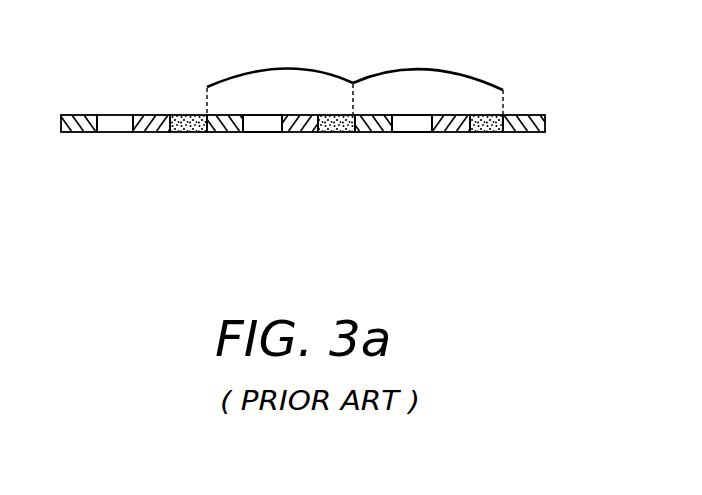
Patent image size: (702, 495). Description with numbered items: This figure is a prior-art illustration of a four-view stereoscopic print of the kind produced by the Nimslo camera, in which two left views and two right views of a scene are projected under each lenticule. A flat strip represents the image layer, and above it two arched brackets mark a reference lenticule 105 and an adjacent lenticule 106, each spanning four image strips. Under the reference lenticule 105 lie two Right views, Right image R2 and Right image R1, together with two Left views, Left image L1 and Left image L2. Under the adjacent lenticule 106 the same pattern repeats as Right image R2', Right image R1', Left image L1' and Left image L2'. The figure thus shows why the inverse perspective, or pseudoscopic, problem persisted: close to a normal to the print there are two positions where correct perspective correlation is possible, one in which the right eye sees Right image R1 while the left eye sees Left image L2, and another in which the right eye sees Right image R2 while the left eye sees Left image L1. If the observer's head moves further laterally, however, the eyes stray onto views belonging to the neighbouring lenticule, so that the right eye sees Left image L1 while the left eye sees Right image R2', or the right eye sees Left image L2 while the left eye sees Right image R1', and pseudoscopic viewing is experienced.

The reference lenticule 105 is at (281, 70).
The adjacent lenticule 106 is at (489, 73).
The Right image R2 is at (225, 164).
The Right image R1 is at (262, 164).
The Left image L1 is at (300, 164).
The Left image L2 is at (336, 164).
The Right image R2' is at (373, 193).
The Right image R1' is at (414, 193).
The Left image L1' is at (454, 193).
The Left image L2' is at (493, 193).